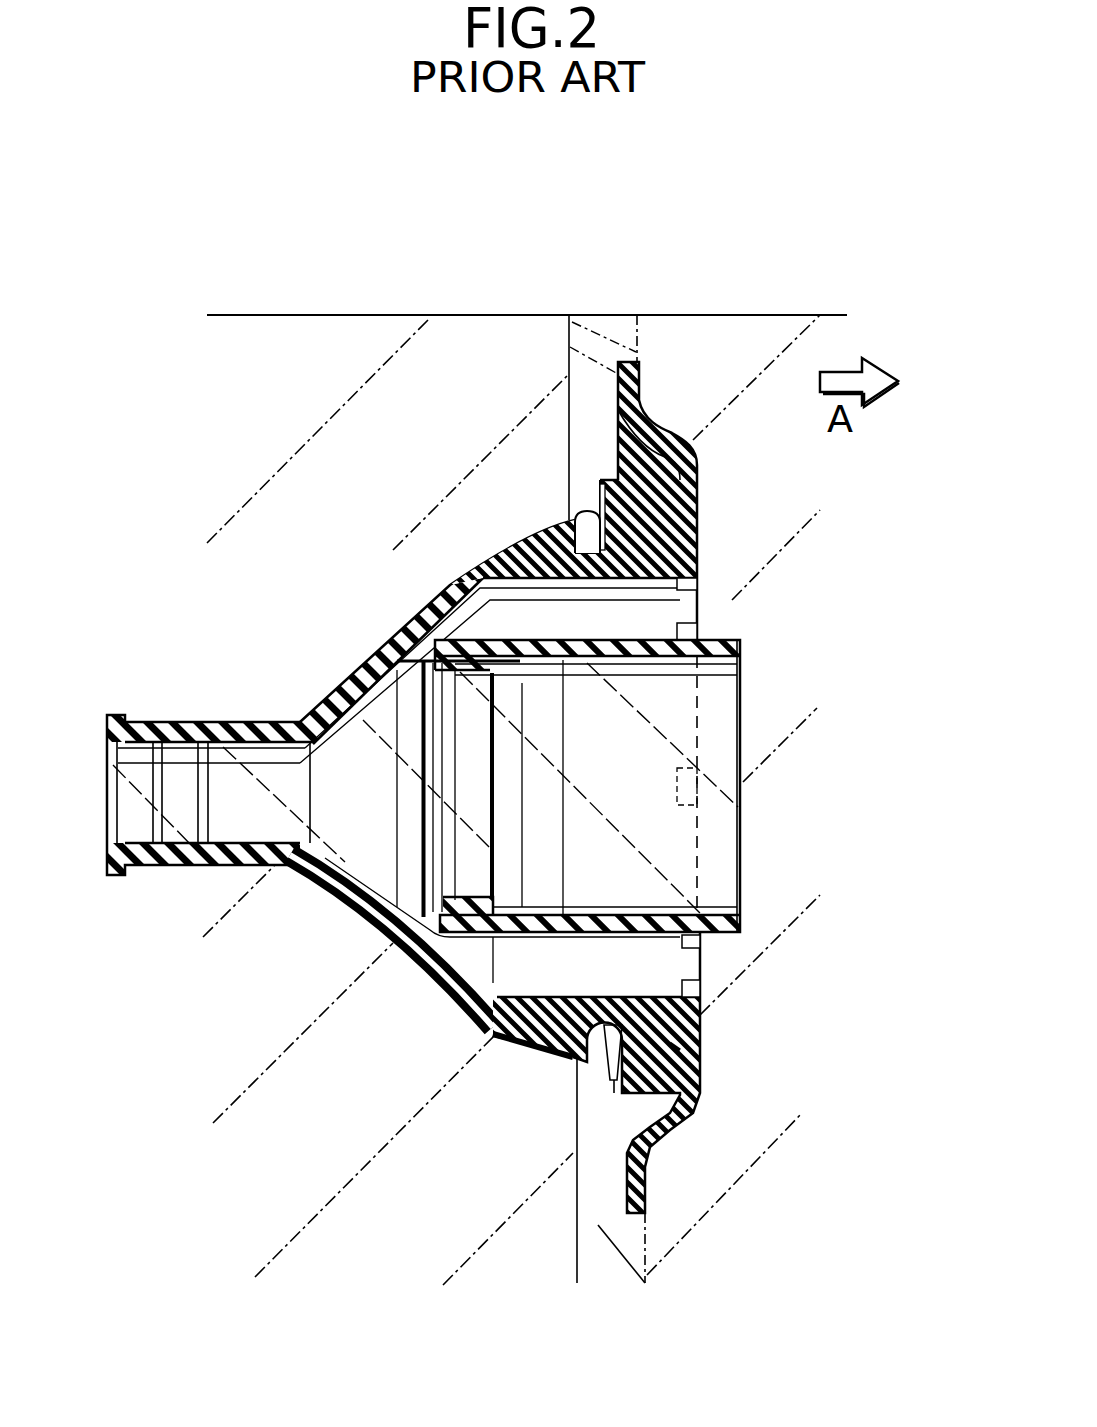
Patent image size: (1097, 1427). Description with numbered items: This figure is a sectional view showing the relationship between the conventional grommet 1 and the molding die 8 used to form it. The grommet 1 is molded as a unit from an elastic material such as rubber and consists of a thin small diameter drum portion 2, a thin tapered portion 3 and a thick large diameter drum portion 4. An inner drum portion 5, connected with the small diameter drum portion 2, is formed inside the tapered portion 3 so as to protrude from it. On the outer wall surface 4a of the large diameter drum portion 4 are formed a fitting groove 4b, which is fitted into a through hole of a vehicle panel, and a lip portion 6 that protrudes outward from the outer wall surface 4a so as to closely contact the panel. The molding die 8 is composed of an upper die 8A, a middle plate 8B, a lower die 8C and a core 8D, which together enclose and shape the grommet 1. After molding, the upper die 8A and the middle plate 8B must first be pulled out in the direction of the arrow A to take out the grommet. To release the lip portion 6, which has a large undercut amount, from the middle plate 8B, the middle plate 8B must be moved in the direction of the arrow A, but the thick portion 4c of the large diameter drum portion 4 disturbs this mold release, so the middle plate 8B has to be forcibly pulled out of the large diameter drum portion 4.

The grommet 1 is at (493, 775).
The small diameter drum portion 2 is at (182, 720).
The tapered portion 3 is at (350, 676).
The large diameter drum portion 4 is at (652, 469).
The outer wall surface 4a is at (645, 1096).
The fitting groove 4b is at (578, 530).
The thick portion 4c is at (672, 1045).
The inner drum portion 5 is at (618, 640).
The lip portion 6 is at (645, 411).
The molding die 8 is at (688, 306).
The upper die 8A is at (783, 322).
The middle plate 8B is at (599, 322).
The lower die 8C is at (405, 326).
The core 8D is at (327, 892).